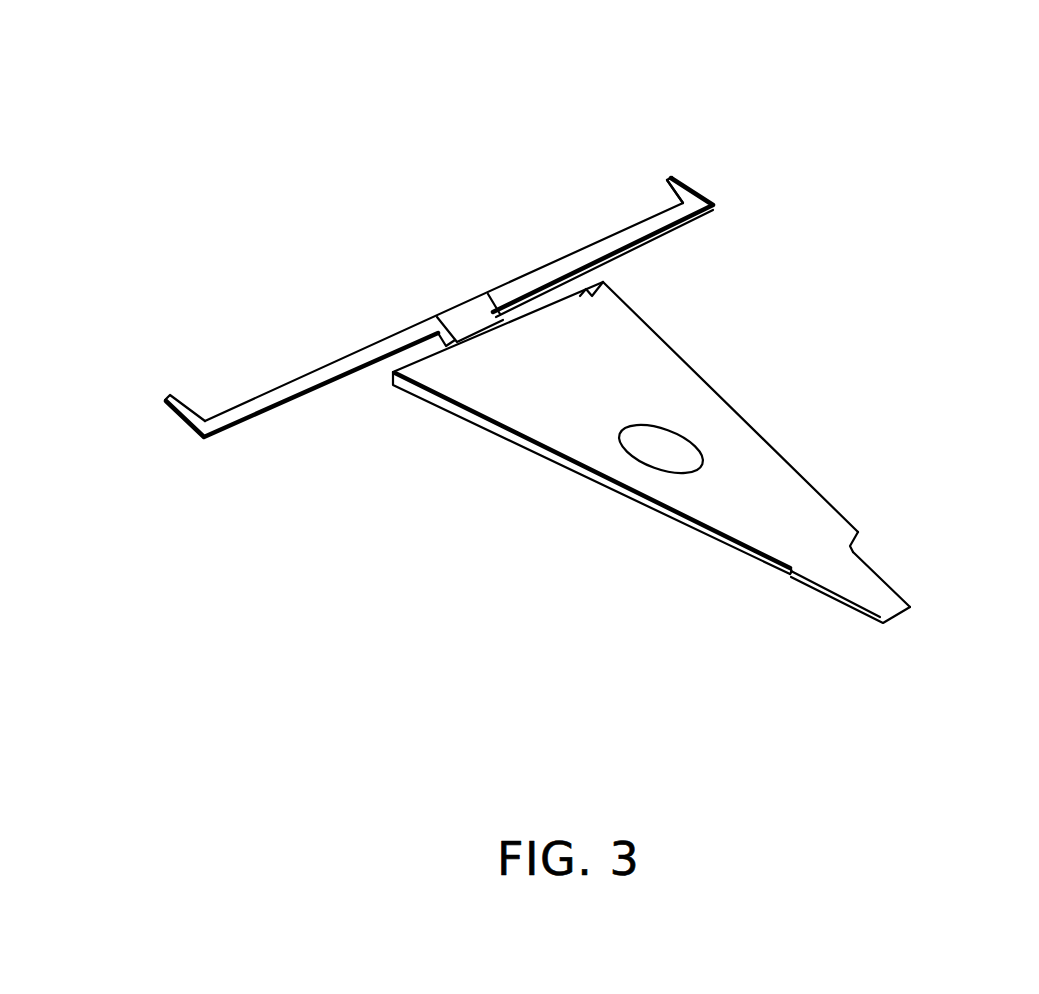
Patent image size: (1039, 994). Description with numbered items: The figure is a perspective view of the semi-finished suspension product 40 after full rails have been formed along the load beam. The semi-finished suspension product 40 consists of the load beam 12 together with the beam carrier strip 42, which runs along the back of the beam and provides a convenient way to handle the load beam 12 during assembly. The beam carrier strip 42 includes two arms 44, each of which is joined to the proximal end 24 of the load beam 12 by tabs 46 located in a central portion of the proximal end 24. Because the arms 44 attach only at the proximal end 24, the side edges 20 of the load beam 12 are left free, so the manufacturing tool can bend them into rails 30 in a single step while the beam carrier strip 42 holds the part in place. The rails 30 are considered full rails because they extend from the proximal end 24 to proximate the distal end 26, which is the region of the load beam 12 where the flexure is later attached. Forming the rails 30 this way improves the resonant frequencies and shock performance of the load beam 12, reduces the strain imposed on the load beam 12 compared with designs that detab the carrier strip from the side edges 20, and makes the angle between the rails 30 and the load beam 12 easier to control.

The load beam 12 is at (806, 501).
The side edges 20 is at (675, 347).
The proximal end 24 is at (420, 357).
The distal end 26 is at (850, 608).
The rails 30 is at (860, 535).
The semi-finished suspension product 40 is at (817, 428).
The beam carrier strip 42 is at (778, 150).
The arms 44 is at (603, 243).
The tabs 46 is at (468, 318).